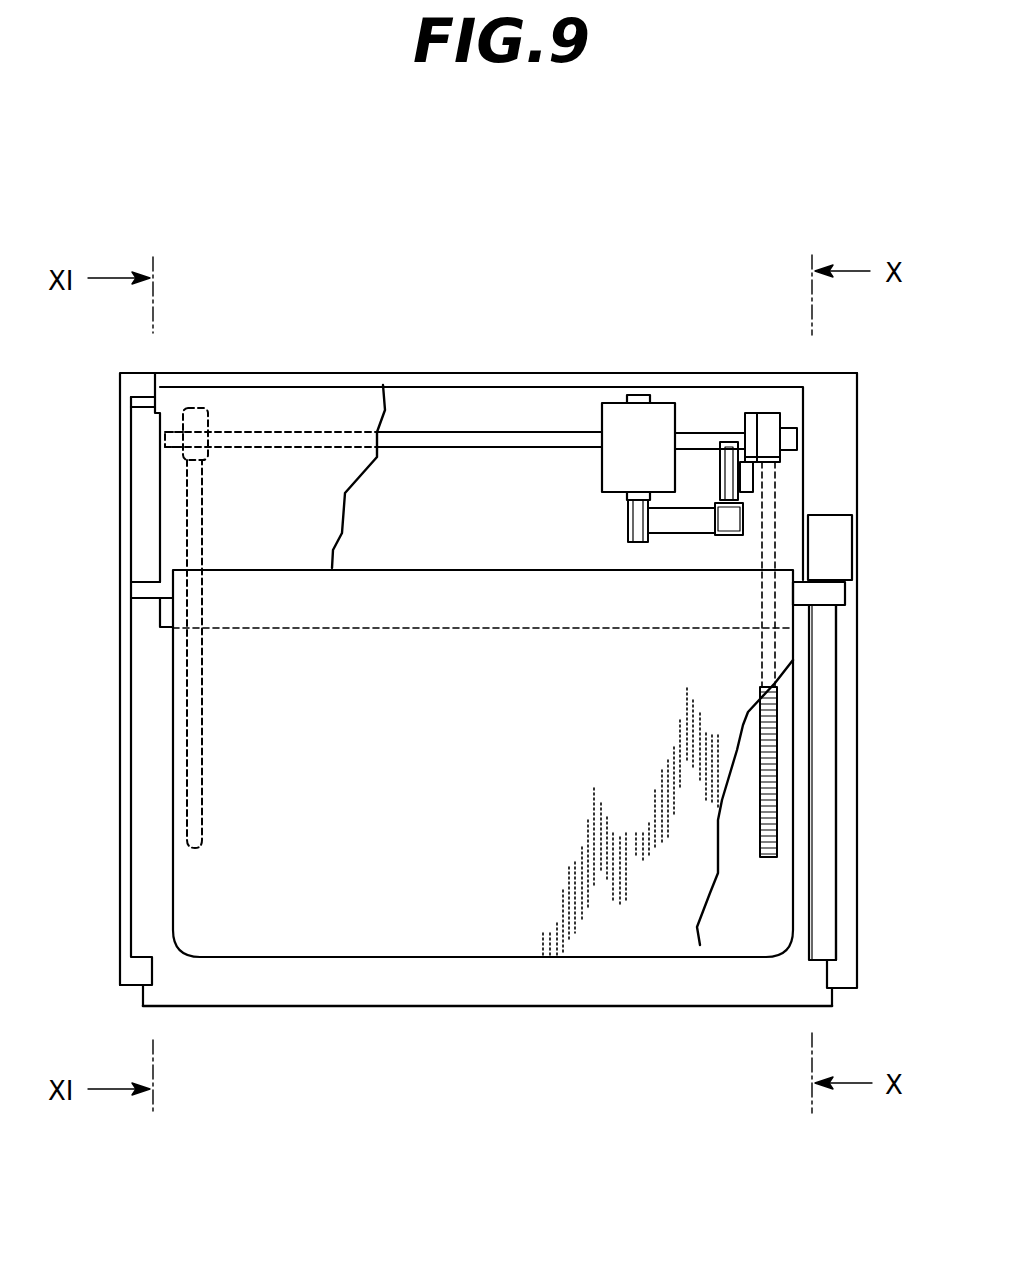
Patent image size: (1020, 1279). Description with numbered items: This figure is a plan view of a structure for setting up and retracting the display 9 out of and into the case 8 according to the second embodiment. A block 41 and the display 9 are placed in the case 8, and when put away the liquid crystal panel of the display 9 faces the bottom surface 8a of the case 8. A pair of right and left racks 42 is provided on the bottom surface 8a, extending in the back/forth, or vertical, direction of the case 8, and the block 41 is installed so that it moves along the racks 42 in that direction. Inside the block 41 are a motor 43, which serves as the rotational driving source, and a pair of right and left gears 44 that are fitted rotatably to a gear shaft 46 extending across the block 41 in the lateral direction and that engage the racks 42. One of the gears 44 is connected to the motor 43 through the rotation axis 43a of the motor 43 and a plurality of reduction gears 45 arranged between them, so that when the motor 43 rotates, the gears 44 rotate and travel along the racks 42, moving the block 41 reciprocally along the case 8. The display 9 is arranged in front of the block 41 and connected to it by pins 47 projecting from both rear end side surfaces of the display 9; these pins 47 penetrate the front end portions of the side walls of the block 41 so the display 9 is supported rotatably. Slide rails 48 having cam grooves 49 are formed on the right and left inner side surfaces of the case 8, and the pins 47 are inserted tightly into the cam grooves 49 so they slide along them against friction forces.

The case 8 is at (857, 420).
The bottom surface 8a is at (700, 993).
The display 9 is at (596, 933).
The block 41 is at (712, 384).
The rack 42 is at (187, 718).
The motor 43 is at (657, 410).
The rotation axis 43a is at (634, 518).
The gear 44 is at (196, 410).
The reduction gear 45 is at (735, 510).
The gear shaft 46 is at (471, 432).
The pin 47 is at (155, 590).
The slide rail 48 is at (842, 630).
The cam groove 49 is at (822, 695).